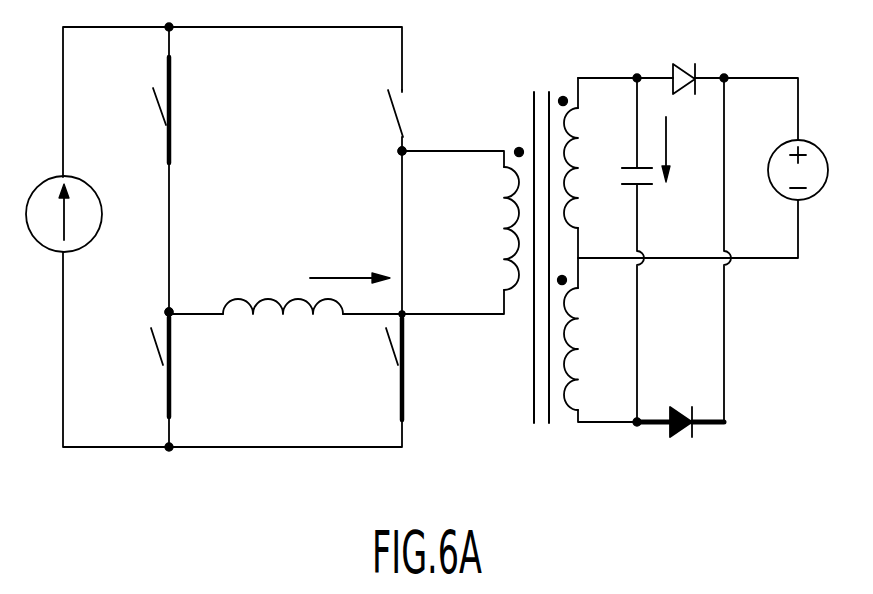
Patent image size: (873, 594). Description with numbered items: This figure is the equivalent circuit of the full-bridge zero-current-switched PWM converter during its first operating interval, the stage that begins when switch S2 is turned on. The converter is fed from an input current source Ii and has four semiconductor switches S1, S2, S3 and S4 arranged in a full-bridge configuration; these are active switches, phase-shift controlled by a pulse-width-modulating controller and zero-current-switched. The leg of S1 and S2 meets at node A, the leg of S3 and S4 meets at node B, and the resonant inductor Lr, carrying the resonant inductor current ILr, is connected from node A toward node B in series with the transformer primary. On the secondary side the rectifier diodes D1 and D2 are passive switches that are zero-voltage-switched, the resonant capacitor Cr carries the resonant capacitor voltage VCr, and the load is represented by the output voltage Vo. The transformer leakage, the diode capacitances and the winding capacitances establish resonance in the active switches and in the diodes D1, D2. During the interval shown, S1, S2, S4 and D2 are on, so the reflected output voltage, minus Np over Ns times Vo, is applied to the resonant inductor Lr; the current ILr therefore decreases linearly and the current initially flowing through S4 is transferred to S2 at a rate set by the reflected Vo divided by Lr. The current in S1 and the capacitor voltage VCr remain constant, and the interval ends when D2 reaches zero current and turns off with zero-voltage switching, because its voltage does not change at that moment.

The input current source Ii is at (62, 193).
The semiconductor switch S1 is at (183, 110).
The semiconductor switch S2 is at (178, 367).
The semiconductor switch S3 is at (370, 112).
The semiconductor switch S4 is at (367, 369).
The node A is at (148, 302).
The node B is at (411, 172).
The resonant inductor Lr is at (285, 285).
The resonant inductor current ILr is at (350, 256).
The rectifier diode D1 is at (680, 57).
The rectifier diode D2 is at (680, 403).
The resonant capacitor Cr is at (647, 196).
The resonant capacitor voltage VCr is at (689, 148).
The output voltage Vo is at (803, 138).